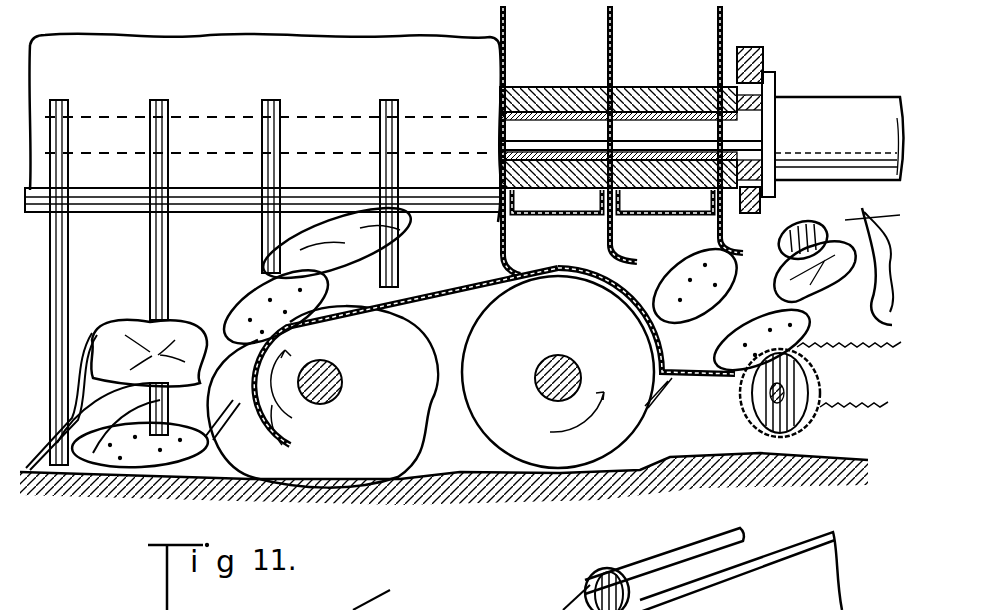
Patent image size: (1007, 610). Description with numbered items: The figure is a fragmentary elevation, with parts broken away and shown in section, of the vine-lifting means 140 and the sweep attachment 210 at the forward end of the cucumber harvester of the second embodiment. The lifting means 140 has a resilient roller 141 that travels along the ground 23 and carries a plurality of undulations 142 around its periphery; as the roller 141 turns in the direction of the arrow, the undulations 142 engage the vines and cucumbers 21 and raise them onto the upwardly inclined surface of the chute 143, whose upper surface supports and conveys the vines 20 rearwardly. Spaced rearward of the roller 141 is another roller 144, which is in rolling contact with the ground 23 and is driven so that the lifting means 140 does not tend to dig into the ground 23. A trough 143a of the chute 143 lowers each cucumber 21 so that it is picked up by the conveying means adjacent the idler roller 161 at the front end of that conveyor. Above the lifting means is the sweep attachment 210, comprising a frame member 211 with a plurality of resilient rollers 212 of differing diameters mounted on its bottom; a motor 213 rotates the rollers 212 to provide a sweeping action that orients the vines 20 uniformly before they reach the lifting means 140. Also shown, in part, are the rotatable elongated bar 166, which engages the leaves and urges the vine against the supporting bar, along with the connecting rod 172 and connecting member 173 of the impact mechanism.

The sweep attachment 210 is at (318, 83).
The frame member 211 is at (386, 50).
The resilient rollers 212 is at (727, 28).
The motor 213 is at (834, 104).
The tomatoes 21 is at (232, 314).
The vine 20 is at (866, 210).
The vine-lifting means 140 is at (471, 364).
The resilient roller 141 is at (395, 398).
The undulations 142 is at (402, 436).
The chute 143 is at (464, 294).
The trough 143a is at (655, 365).
The roller 144 is at (583, 336).
The idler roller 161 is at (745, 402).
The ground 23 is at (677, 455).
The connecting rod 172 is at (676, 553).
The connecting member 173 is at (586, 590).
The rotatable elongated bar 166 is at (850, 609).